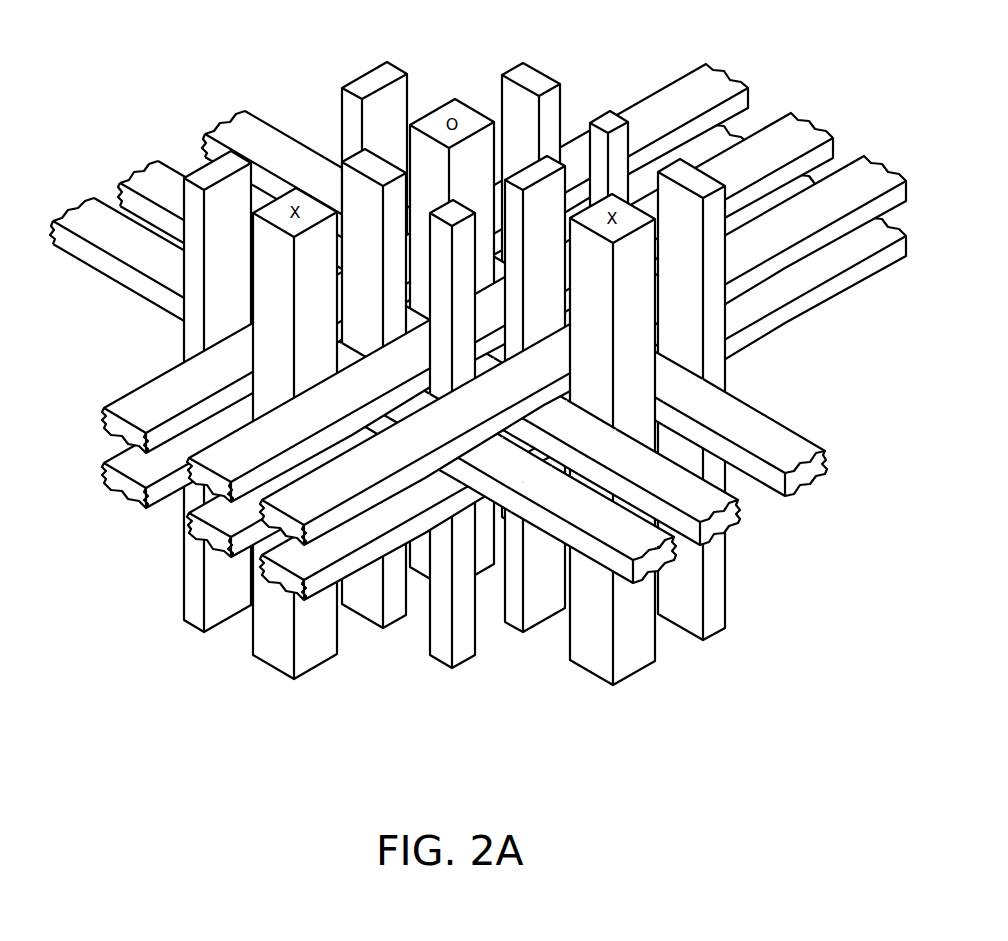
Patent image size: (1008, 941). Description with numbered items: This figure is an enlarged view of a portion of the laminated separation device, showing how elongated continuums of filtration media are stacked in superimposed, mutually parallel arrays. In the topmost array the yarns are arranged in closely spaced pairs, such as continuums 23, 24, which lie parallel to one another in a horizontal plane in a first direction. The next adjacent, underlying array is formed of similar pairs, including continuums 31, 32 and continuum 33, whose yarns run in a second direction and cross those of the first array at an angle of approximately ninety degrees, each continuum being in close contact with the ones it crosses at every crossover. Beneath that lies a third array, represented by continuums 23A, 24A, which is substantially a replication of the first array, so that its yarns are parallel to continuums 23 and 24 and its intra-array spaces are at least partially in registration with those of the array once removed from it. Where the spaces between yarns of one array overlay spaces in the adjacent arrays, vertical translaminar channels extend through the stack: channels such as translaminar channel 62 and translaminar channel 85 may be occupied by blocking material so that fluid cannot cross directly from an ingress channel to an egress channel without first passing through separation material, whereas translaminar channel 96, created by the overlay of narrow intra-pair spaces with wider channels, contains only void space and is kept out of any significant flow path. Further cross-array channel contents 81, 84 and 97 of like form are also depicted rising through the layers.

The continuum 23 is at (279, 452).
The continuum 24 is at (345, 492).
The third-array continuum 23A is at (228, 522).
The third-array continuum 24A is at (300, 563).
The continuum 31 is at (605, 527).
The continuum 32 is at (675, 488).
The continuum 33 is at (769, 444).
The post 81 is at (378, 167).
The post 84 is at (536, 84).
The translaminar channel 85 is at (692, 305).
The translaminar channel 62 is at (546, 170).
The translaminar channel 96 is at (456, 212).
The post 97 is at (611, 121).